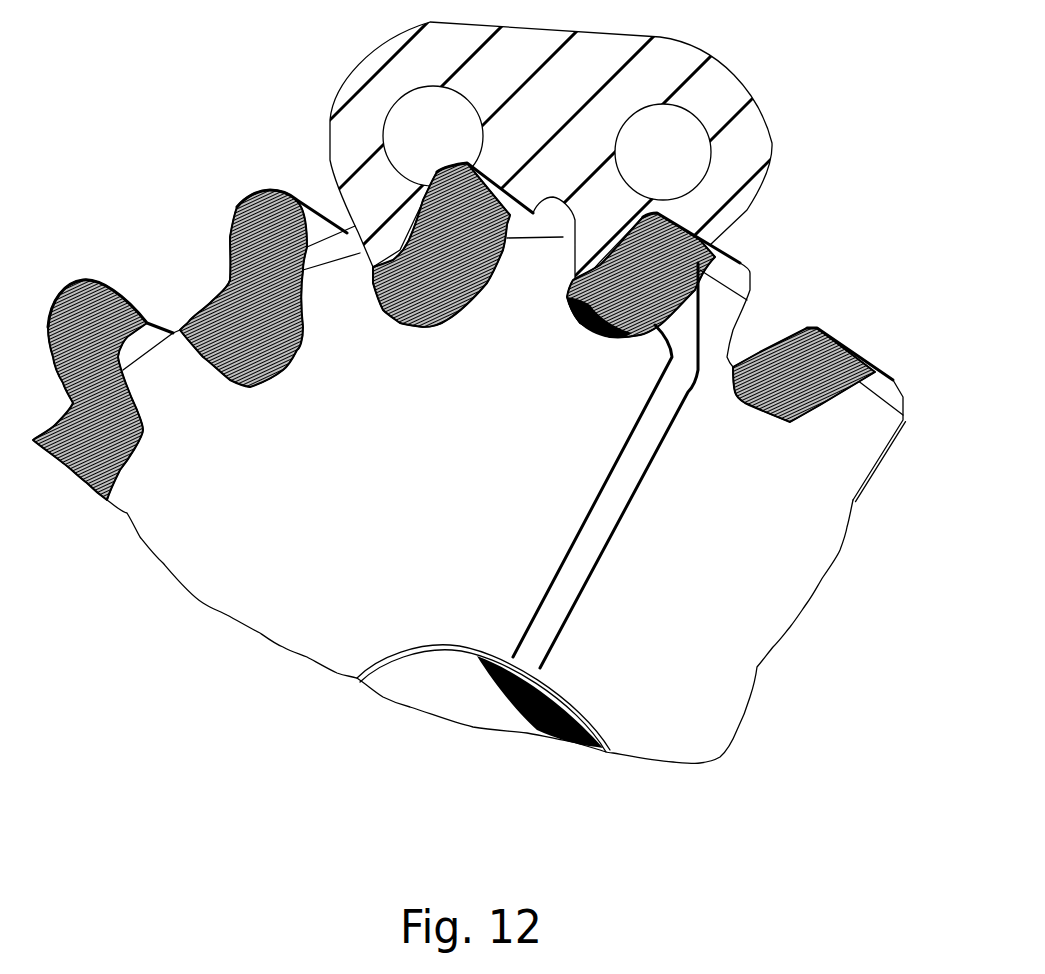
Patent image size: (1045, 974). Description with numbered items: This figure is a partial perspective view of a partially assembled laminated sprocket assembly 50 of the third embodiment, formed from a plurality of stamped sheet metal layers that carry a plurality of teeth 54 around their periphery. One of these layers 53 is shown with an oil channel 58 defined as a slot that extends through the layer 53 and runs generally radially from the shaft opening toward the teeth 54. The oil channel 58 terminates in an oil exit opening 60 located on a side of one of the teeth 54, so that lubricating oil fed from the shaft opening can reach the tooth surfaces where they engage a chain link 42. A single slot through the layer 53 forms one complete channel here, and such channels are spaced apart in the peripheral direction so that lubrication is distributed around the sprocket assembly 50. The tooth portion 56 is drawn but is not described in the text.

The chain link 42 is at (313, 100).
The laminated sprocket assembly 50 is at (491, 463).
The layer 53 is at (700, 595).
The teeth 54 is at (867, 363).
The tooth crest edge 56 is at (827, 332).
The oil channel 58 is at (683, 347).
The oil exit opening 60 is at (693, 247).